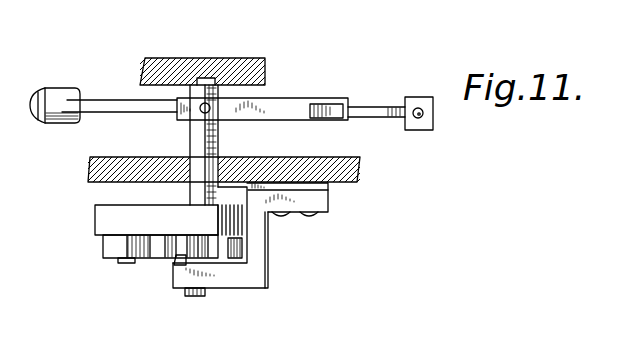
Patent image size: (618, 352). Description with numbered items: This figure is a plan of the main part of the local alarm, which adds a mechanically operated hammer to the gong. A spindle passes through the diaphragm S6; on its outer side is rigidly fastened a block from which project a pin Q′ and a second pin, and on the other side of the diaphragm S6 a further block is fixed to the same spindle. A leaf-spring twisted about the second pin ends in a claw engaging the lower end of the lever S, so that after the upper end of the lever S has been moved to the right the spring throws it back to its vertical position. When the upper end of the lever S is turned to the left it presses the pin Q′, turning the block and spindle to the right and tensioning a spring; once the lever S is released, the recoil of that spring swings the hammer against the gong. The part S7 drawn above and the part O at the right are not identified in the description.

The upper guide block S7 is at (182, 47).
The diaphragm S6 is at (281, 152).
The bracket O is at (317, 202).
The lever S is at (205, 250).
The pin Q′ is at (180, 262).